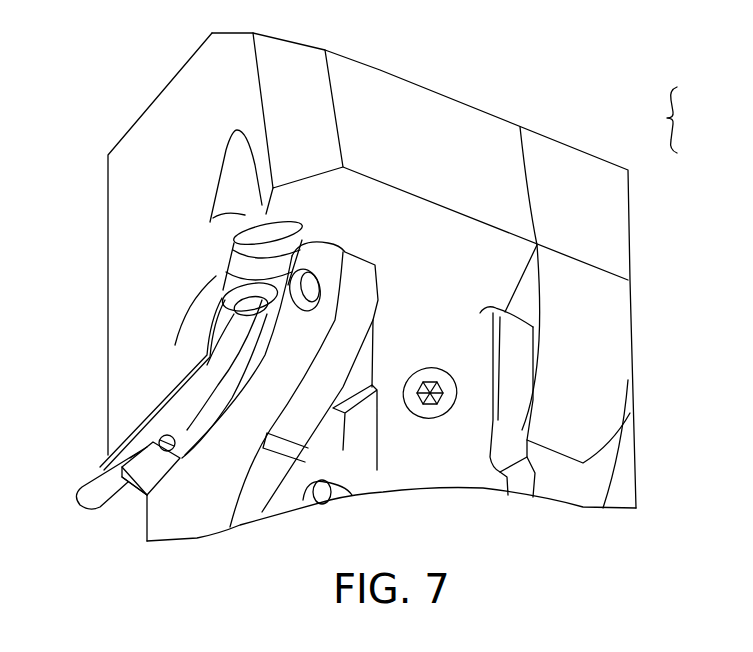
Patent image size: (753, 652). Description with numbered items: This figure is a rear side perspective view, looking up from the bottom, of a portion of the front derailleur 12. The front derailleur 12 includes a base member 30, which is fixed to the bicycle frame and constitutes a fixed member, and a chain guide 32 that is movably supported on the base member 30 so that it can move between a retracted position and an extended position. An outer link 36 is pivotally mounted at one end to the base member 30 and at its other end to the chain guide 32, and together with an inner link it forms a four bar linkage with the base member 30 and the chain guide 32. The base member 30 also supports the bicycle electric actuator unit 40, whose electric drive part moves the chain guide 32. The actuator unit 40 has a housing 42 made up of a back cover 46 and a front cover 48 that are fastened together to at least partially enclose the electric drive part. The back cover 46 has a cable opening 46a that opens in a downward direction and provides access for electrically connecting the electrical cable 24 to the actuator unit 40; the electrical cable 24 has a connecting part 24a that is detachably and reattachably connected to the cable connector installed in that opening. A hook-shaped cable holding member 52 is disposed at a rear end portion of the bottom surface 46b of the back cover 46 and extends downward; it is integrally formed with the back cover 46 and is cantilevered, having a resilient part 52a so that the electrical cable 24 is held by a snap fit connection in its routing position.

The front derailleur 12 is at (585, 81).
The bicycle electric actuator unit 40 is at (430, 84).
The housing 42 is at (607, 120).
The back cover 46 is at (498, 113).
The front cover 48 is at (597, 153).
The cable opening 46a is at (223, 267).
The connecting part 24a is at (218, 288).
The electrical cable 24 is at (93, 478).
The bottom surface 46b is at (200, 426).
The cable holding member 52 is at (141, 446).
The resilient part 52a is at (135, 490).
The base member 30 is at (147, 518).
The chain guide 32 is at (362, 477).
The outer link 36 is at (473, 397).